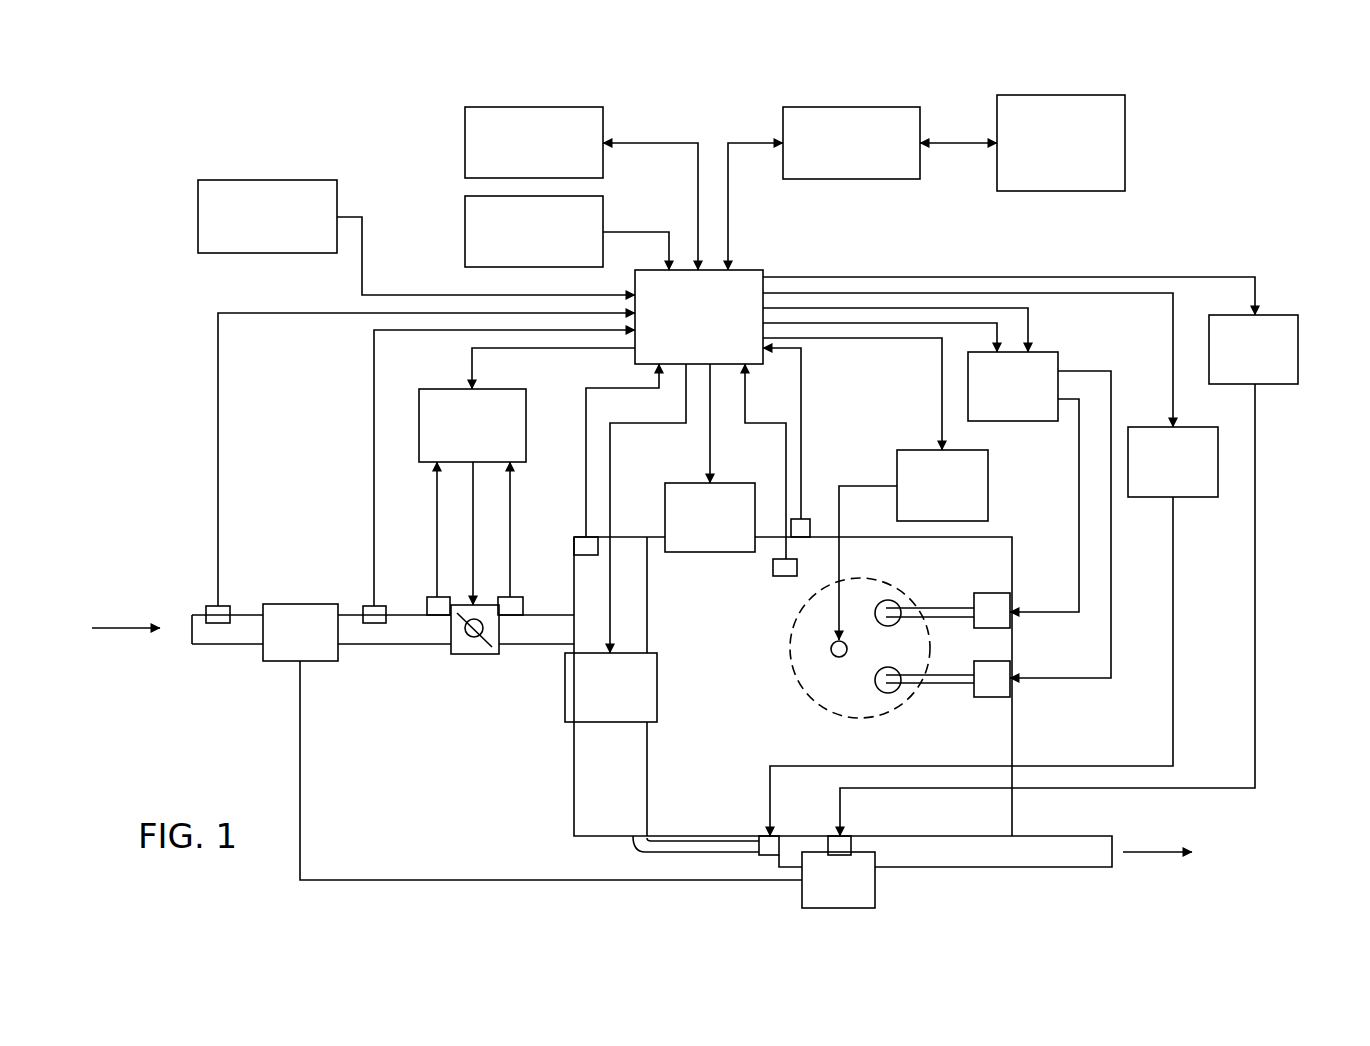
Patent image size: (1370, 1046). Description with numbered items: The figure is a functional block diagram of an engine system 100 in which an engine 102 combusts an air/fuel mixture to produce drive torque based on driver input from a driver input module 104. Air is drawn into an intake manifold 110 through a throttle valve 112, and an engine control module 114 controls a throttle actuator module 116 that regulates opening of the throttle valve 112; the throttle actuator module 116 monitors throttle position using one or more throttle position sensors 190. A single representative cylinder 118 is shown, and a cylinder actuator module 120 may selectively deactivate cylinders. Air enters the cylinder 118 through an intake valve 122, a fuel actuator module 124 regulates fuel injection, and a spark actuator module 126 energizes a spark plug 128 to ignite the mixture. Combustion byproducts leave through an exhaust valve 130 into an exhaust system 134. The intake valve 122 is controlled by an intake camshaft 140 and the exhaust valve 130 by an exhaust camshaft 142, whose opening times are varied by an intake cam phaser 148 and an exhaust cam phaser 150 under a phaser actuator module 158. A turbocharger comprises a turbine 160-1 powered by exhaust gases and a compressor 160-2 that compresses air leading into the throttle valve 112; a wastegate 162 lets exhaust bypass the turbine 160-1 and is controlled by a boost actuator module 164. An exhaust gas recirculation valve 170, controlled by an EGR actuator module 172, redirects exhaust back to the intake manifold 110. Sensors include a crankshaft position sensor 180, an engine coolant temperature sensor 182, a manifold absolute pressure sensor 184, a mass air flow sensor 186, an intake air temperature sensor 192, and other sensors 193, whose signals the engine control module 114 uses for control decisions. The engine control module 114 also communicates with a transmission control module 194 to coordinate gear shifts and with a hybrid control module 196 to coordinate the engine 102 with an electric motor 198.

The engine system 100 is at (157, 175).
The engine 102 is at (1012, 550).
The driver input module 104 is at (465, 230).
The intake manifold 110 is at (574, 777).
The throttle valve 112 is at (466, 655).
The engine control module 114 is at (749, 271).
The throttle actuator module 116 is at (438, 389).
The cylinder 118 is at (850, 716).
The cylinder actuator module 120 is at (688, 552).
The intake valve 122 is at (876, 600).
The fuel actuator module 124 is at (565, 684).
The spark actuator module 126 is at (988, 486).
The spark plug 128 is at (831, 652).
The exhaust valve 130 is at (876, 682).
The exhaust system 134 is at (1107, 872).
The intake camshaft 140 is at (943, 606).
The exhaust camshaft 142 is at (945, 685).
The intake cam phaser 148 is at (985, 593).
The exhaust cam phaser 150 is at (993, 697).
The phaser actuator module 158 is at (1058, 362).
The turbine 160-1 is at (875, 885).
The compressor 160-2 is at (300, 604).
The wastegate 162 is at (851, 845).
The boost actuator module 164 is at (1298, 350).
The exhaust gas recirculation valve 170 is at (768, 834).
The EGR actuator module 172 is at (1197, 497).
The crankshaft position sensor 180 is at (801, 519).
The engine coolant temperature sensor 182 is at (786, 576).
The manifold absolute pressure sensor 184 is at (580, 537).
The mass air flow sensor 186 is at (374, 606).
The throttle position sensor 190 is at (438, 597).
The intake air temperature sensor 192 is at (218, 606).
The other sensors 193 is at (198, 217).
The transmission control module 194 is at (465, 143).
The hybrid control module 196 is at (852, 179).
The electric motor 198 is at (1125, 143).